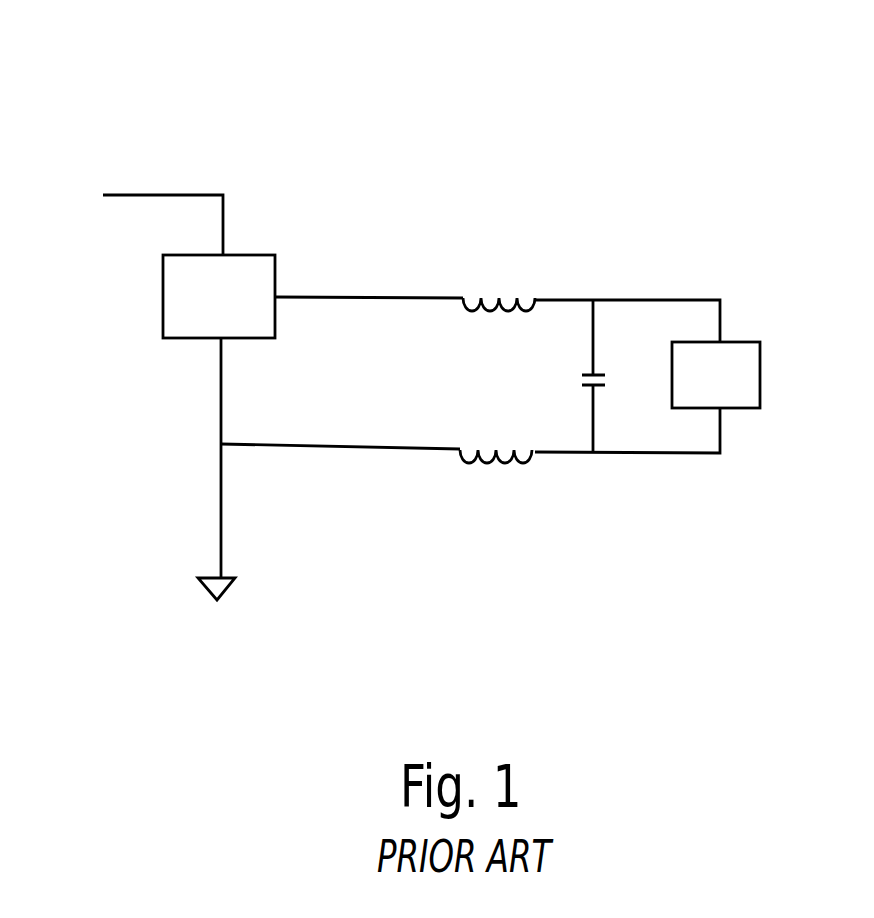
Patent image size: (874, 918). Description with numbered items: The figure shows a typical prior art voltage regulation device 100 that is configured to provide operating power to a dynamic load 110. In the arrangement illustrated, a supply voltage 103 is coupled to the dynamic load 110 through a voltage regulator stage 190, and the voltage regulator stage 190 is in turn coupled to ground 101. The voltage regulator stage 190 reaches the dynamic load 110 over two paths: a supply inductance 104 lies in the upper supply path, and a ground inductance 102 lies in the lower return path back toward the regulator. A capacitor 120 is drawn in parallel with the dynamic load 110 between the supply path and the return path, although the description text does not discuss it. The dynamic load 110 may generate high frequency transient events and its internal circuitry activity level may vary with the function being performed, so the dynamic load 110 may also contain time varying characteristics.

The voltage regulation device 100 is at (286, 74).
The ground 101 is at (228, 582).
The ground inductance 102 is at (497, 447).
The supply voltage 103 is at (98, 176).
The supply inductance 104 is at (500, 297).
The dynamic load 110 is at (762, 357).
The decoupling capacitor 120 is at (591, 376).
The voltage regulator stage 190 is at (278, 266).